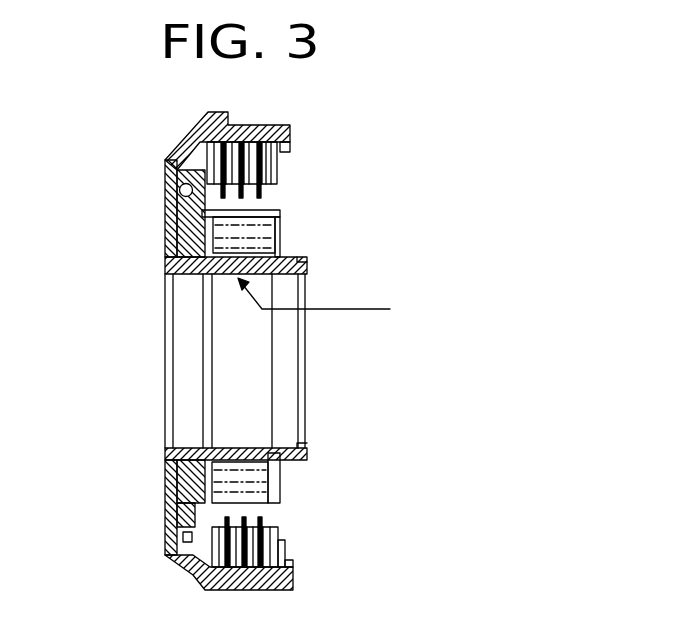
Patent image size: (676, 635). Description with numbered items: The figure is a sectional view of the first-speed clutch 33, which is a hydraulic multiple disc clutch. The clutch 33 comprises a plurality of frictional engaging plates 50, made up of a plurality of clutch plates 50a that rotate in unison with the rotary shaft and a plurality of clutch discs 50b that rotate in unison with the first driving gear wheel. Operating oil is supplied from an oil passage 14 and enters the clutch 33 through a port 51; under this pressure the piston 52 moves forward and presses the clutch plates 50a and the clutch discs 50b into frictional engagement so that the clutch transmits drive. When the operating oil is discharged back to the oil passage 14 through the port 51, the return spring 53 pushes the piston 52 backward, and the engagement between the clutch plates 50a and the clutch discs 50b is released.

The first-speed clutch 33 is at (101, 198).
The frictional engaging plates 50 is at (289, 174).
The clutch plates 50a is at (277, 184).
The clutch discs 50b is at (263, 195).
The port 51 is at (235, 276).
The oil passage 14 is at (348, 309).
The piston 52 is at (187, 483).
The return spring 53 is at (272, 487).